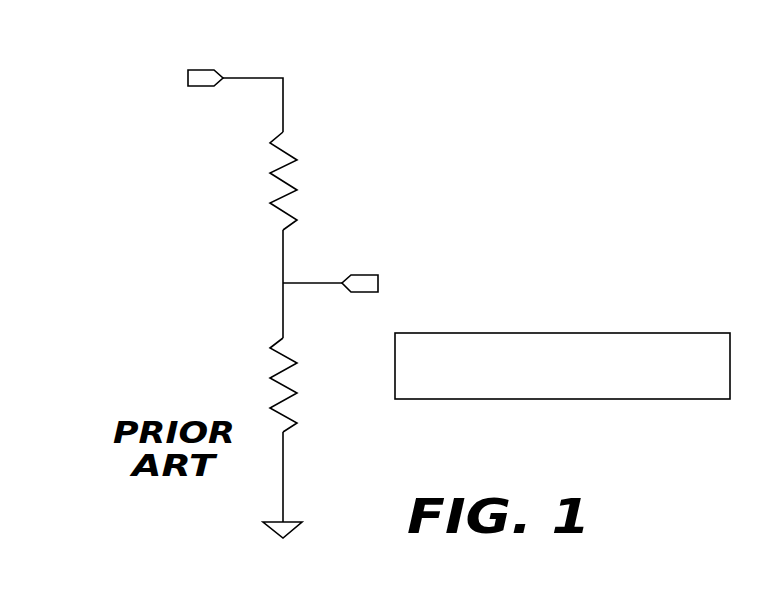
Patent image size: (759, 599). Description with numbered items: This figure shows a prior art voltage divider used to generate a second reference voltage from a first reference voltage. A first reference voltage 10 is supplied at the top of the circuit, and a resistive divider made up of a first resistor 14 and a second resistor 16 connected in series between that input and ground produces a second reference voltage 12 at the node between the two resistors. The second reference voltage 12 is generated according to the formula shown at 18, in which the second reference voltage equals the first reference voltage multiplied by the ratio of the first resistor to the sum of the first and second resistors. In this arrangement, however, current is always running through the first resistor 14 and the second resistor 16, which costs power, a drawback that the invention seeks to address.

The first reference voltage 10 is at (222, 31).
The second reference voltage 12 is at (444, 243).
The resistor R1 14 is at (205, 148).
The resistor R2 16 is at (200, 337).
The formula 18 is at (606, 312).